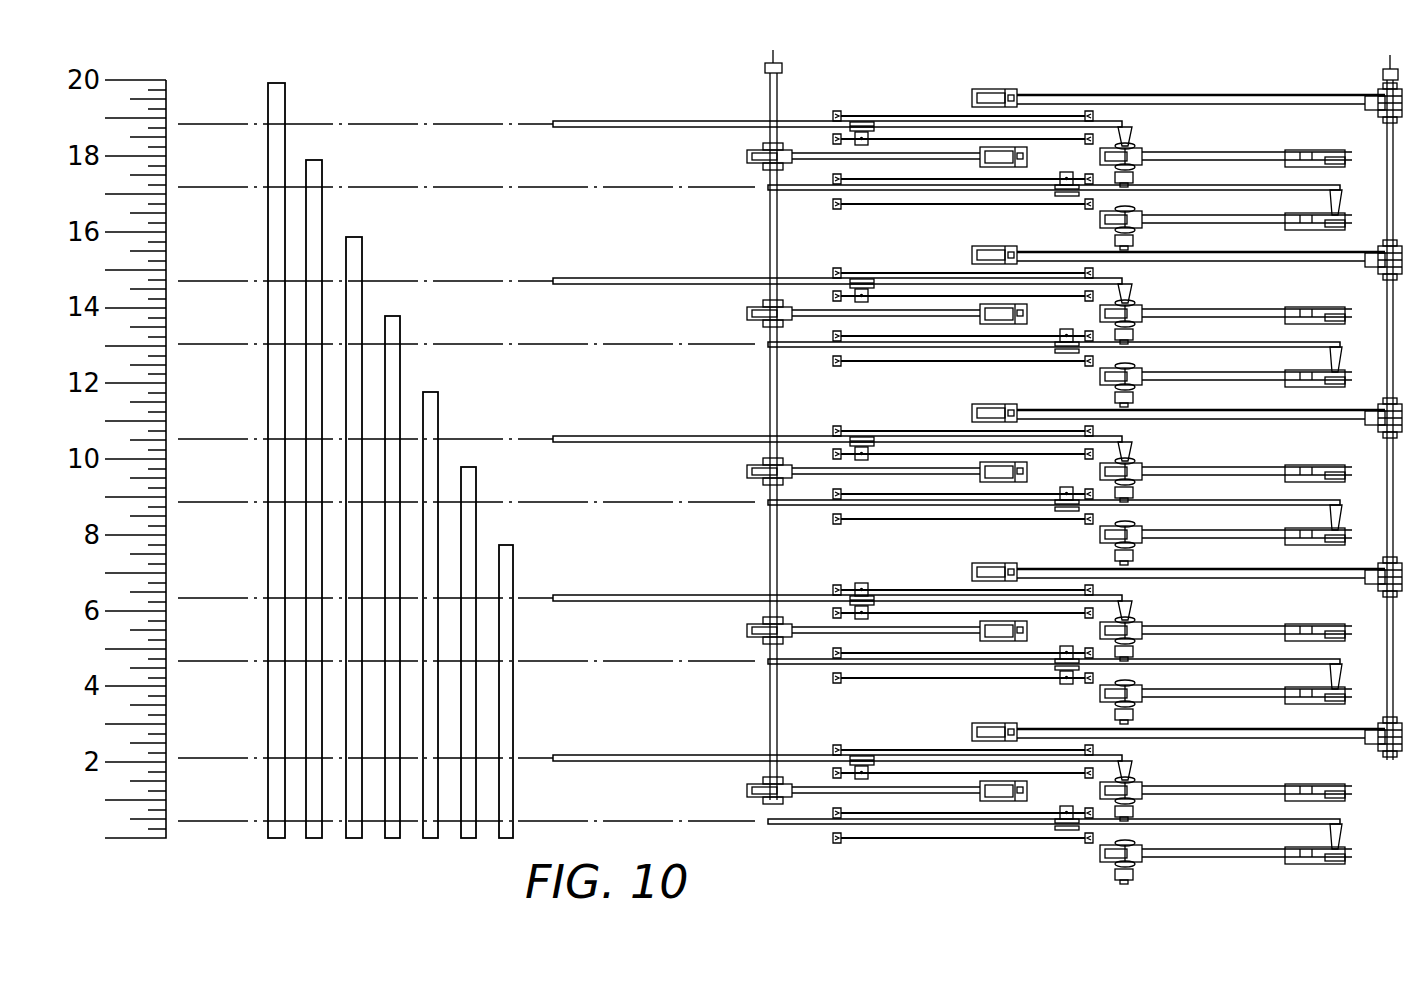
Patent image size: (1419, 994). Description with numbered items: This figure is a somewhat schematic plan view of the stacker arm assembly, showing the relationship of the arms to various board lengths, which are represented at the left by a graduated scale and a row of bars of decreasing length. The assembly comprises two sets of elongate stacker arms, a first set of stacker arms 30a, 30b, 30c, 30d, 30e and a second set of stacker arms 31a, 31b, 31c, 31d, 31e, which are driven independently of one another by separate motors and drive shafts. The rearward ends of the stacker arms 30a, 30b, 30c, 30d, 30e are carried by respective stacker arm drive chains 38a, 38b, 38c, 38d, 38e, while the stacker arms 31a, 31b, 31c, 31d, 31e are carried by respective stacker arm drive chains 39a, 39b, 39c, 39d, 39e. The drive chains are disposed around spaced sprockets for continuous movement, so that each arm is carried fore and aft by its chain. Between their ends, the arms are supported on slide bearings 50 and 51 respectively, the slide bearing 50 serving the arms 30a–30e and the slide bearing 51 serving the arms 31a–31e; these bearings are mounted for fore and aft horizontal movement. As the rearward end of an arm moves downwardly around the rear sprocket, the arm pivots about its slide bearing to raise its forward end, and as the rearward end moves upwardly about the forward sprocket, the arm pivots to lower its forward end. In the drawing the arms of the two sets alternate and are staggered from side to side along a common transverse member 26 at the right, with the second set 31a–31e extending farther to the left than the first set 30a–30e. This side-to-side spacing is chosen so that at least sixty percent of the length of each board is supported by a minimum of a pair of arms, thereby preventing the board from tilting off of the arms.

The rod 26 is at (1208, 94).
The stacker arm 30a is at (1055, 852).
The stacker arm 30b is at (1055, 692).
The stacker arm 30c is at (1055, 533).
The stacker arm 30d is at (1055, 375).
The stacker arm 30e is at (808, 190).
The stacker arm 31a is at (842, 746).
The stacker arm 31b is at (842, 586).
The stacker arm 31c is at (842, 427).
The stacker arm 31d is at (842, 269).
The stacker arm 31e is at (668, 121).
The stacker arm drive chain 38a is at (1226, 865).
The stacker arm drive chain 38b is at (1226, 705).
The stacker arm drive chain 38c is at (1226, 546).
The stacker arm drive chain 38d is at (1226, 388).
The stacker arm drive chain 38e is at (1197, 219).
The stacker arm drive chain 39a is at (1226, 787).
The stacker arm drive chain 39b is at (1226, 627).
The stacker arm drive chain 39c is at (1226, 468).
The stacker arm drive chain 39d is at (1226, 310).
The stacker arm drive chain 39e is at (1197, 156).
The slide bearing 50 is at (1033, 691).
The slide bearing 51 is at (875, 565).